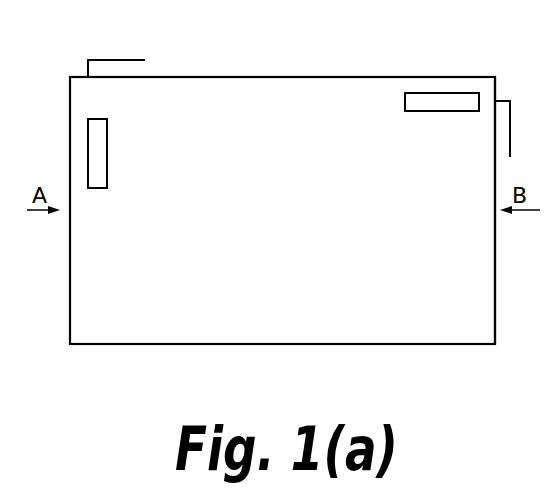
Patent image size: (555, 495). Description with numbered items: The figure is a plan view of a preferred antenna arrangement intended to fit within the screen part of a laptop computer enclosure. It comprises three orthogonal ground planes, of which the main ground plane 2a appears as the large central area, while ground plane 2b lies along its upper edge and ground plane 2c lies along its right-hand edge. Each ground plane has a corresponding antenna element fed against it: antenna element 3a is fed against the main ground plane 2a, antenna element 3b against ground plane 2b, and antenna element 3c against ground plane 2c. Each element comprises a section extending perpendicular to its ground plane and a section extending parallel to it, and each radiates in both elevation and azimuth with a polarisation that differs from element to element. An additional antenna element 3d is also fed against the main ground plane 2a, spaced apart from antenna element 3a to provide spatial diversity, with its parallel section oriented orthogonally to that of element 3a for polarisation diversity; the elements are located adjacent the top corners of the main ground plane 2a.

The main ground plane 2a is at (200, 320).
The ground plane 2b is at (182, 77).
The ground plane 2c is at (493, 145).
The antenna element 3a is at (98, 192).
The antenna element 3b is at (124, 60).
The antenna element 3c is at (512, 115).
The additional antenna element 3d is at (405, 104).